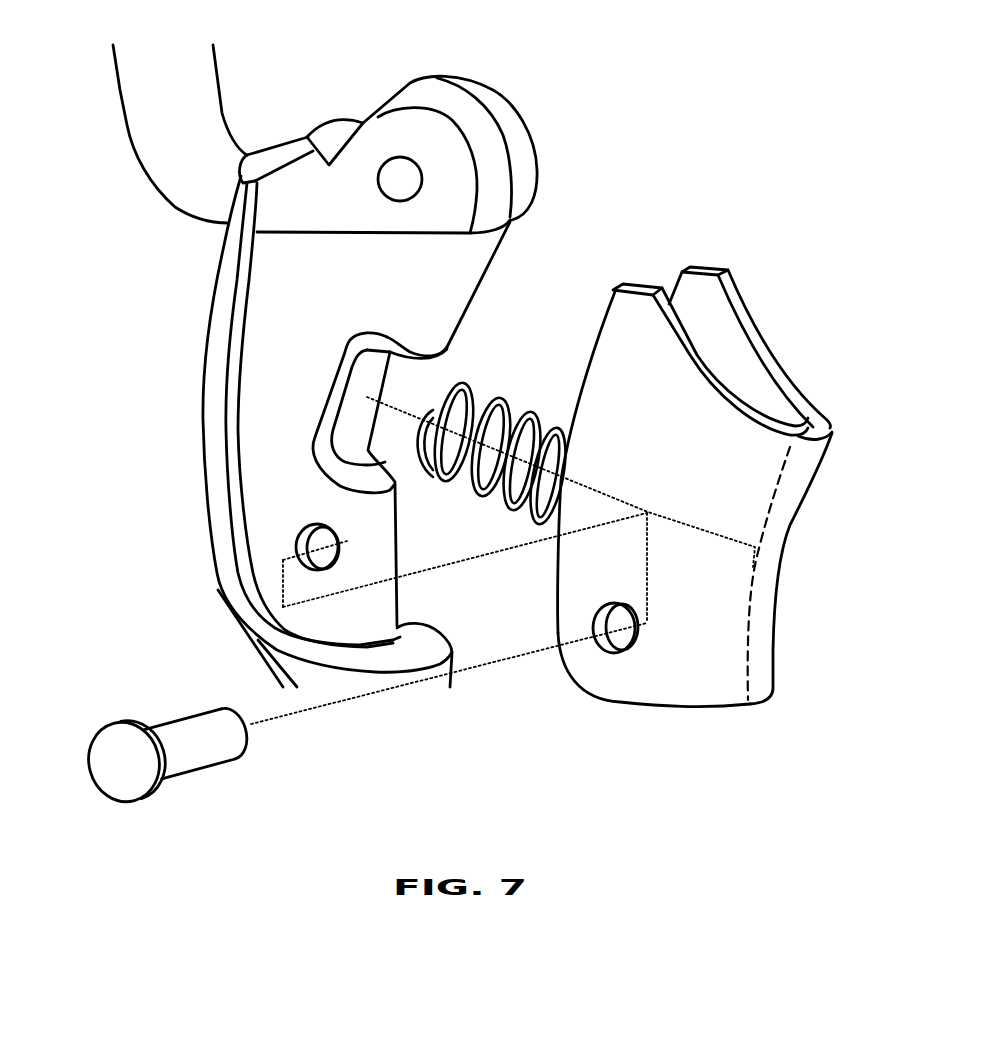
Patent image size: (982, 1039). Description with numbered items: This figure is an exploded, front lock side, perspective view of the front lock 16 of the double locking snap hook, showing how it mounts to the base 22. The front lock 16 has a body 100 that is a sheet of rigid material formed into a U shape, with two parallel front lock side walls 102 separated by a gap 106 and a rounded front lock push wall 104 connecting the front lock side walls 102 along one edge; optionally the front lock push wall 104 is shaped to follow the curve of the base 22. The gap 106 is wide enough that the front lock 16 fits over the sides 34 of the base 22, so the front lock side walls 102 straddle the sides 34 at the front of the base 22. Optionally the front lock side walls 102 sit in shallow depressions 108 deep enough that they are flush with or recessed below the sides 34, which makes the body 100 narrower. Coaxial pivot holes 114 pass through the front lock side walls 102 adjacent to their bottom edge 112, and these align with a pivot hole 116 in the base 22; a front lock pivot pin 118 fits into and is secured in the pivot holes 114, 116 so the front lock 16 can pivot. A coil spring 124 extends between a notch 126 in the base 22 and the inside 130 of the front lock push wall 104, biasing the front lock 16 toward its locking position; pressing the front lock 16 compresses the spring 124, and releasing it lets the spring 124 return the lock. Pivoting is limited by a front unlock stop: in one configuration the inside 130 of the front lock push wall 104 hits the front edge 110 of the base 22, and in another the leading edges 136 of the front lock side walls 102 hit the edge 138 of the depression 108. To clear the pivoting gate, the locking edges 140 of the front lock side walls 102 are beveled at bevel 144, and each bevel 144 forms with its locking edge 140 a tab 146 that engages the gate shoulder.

The front lock 16 is at (717, 165).
The base 22 is at (462, 76).
The sides 34 is at (295, 187).
The body 100 is at (777, 679).
The front lock side walls 102 is at (600, 392).
The front lock push wall 104 is at (799, 506).
The gap 106 is at (733, 370).
The depressions 108 is at (273, 328).
The edge 110 is at (490, 278).
The bottom edge 112 is at (663, 707).
The pivot holes 114 is at (635, 645).
The pivot hole 116 is at (318, 523).
The front lock pivot pin 118 is at (190, 770).
The coil spring 124 is at (507, 507).
The notch 126 is at (392, 379).
The inside 130 is at (757, 566).
The leading edges 136 is at (556, 576).
The edge 138 is at (230, 422).
The locking edges 140 is at (637, 285).
The bevel 144 is at (752, 338).
The tab 146 is at (627, 310).